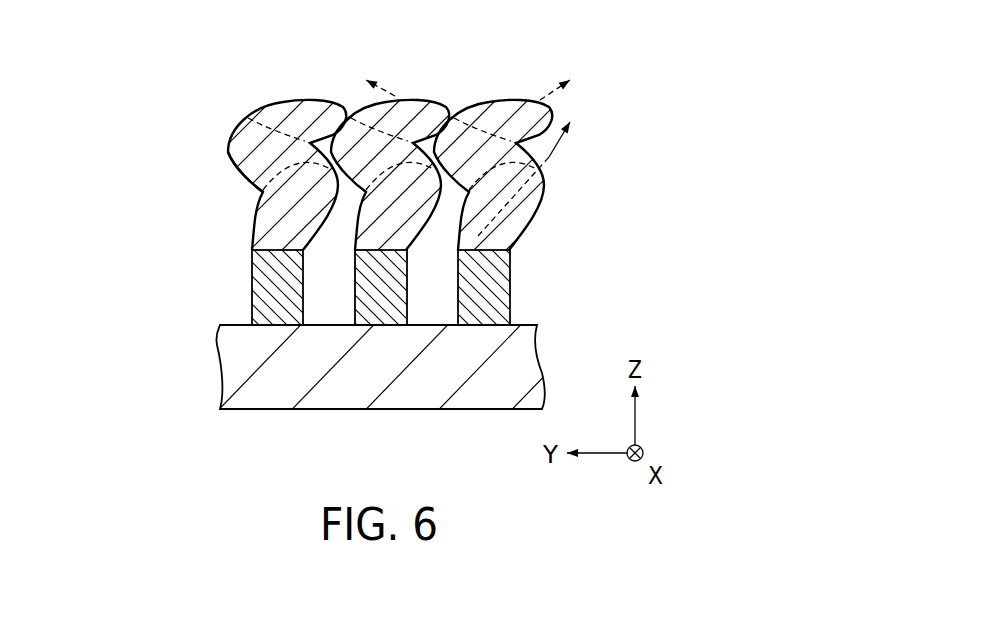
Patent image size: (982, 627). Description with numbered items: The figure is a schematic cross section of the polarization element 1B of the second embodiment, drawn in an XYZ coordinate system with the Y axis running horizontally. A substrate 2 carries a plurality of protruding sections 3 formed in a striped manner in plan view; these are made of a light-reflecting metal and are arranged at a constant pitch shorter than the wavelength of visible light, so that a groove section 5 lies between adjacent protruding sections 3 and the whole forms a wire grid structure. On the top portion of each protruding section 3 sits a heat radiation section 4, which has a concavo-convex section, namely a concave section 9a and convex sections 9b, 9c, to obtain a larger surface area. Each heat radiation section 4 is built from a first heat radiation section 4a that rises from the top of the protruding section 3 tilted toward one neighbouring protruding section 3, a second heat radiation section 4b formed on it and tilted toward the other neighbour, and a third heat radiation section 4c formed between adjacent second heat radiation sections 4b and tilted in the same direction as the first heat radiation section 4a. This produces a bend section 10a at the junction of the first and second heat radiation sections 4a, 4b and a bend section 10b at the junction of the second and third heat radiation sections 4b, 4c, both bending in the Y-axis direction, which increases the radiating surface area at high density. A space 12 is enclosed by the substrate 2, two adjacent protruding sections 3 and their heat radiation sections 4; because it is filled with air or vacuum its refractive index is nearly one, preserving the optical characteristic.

The polarization element 1B is at (569, 63).
The substrate 2 is at (532, 364).
The protruding section 3 is at (263, 290).
The heat radiation section 4 is at (549, 166).
The first heat radiation section 4a is at (256, 219).
The second heat radiation section 4b is at (237, 157).
The third heat radiation section 4c is at (293, 101).
The groove section 5 is at (433, 316).
The concave section 9a is at (461, 194).
The convex section 9b is at (452, 110).
The convex section 9c is at (560, 107).
The bend section 10a is at (257, 193).
The bend section 10b is at (231, 122).
The space 12 is at (330, 285).